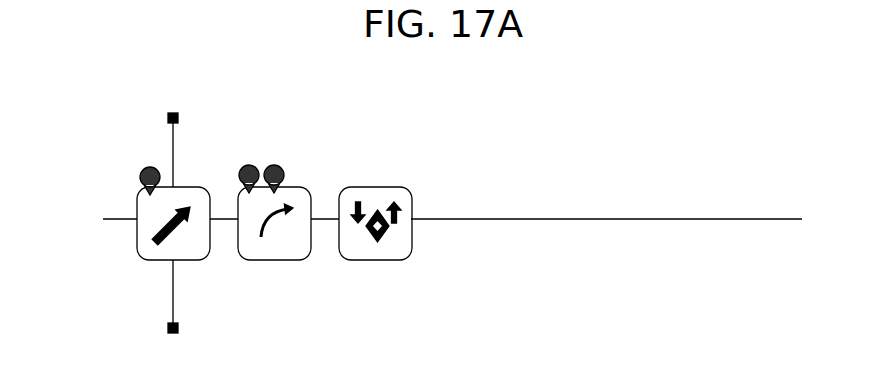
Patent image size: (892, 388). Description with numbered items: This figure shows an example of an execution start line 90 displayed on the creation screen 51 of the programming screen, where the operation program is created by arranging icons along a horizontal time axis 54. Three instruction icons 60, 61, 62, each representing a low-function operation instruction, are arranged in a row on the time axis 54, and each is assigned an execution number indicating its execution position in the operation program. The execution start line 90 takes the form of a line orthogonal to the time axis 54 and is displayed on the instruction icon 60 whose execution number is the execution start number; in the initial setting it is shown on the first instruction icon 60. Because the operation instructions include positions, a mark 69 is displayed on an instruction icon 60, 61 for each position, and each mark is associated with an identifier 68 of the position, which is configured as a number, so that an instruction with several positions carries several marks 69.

The creation screen 51 is at (637, 290).
The time axis 54 is at (713, 218).
The instruction icon 60 is at (187, 188).
The instruction icon 61 is at (295, 187).
The instruction icon 62 is at (380, 187).
The identifier of the position 68 is at (290, 183).
The mark 69 is at (273, 166).
The execution start line 90 is at (168, 140).